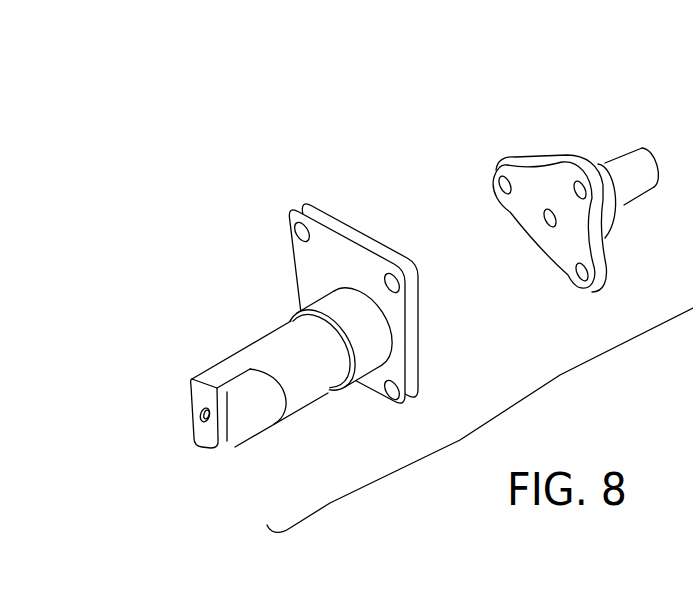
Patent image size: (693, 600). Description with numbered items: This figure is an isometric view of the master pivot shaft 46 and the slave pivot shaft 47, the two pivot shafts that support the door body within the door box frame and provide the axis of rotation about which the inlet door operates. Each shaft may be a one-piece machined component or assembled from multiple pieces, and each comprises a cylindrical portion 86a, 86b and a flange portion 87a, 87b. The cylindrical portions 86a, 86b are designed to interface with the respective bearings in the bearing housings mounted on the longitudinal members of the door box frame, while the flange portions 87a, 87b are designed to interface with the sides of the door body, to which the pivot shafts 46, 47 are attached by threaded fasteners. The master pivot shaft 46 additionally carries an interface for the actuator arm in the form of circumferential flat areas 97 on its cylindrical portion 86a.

The master pivot shaft 46 is at (260, 321).
The slave pivot shaft 47 is at (558, 168).
The cylindrical portion 86a is at (257, 350).
The cylindrical portion 86b is at (635, 157).
The flange portion 87a is at (342, 227).
The flange portion 87b is at (518, 219).
The circumferential flat areas 97 is at (250, 412).